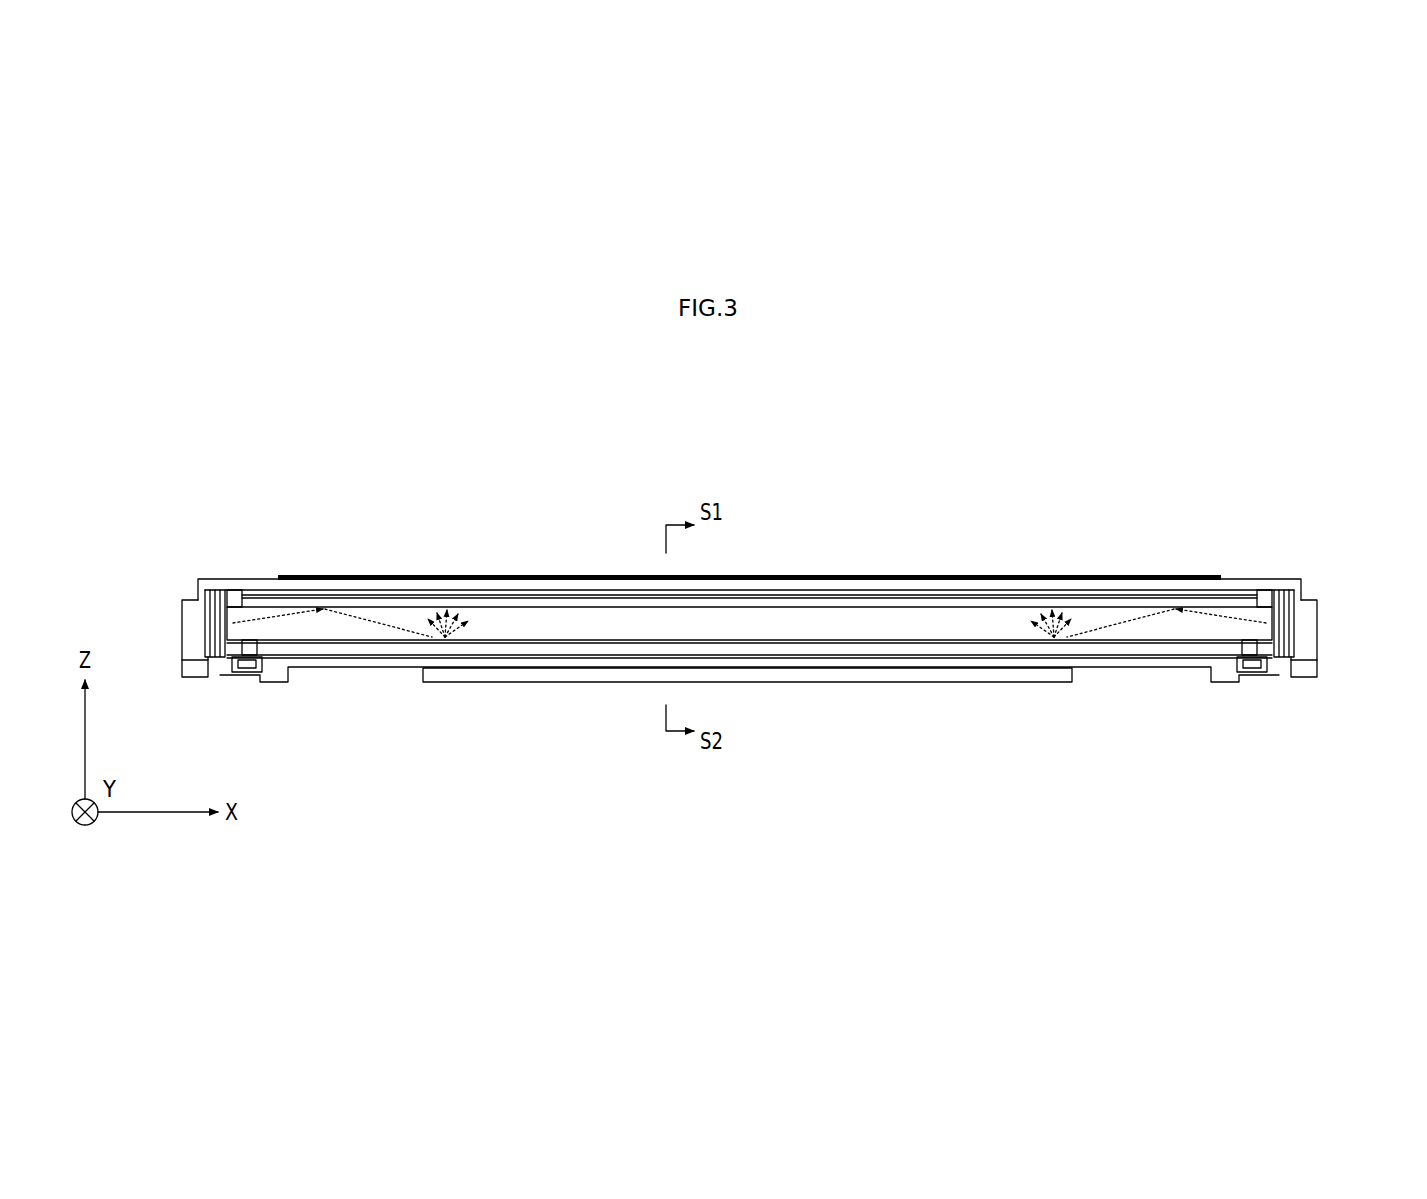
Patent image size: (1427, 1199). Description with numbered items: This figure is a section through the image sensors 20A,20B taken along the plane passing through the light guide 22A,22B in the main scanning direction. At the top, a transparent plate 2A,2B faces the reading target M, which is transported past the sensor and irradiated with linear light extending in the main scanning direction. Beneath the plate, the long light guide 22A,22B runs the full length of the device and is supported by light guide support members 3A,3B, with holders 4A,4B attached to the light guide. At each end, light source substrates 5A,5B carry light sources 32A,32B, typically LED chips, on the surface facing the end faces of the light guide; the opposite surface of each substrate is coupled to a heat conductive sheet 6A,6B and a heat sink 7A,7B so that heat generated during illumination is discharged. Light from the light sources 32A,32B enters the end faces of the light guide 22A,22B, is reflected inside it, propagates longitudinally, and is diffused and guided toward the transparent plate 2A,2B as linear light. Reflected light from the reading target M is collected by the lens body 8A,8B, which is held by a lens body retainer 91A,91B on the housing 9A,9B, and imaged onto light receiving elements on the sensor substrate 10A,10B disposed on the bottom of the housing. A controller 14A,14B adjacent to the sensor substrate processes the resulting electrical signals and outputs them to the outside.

The image sensor 20A,20B is at (749, 537).
The transparent plate 2A,2B is at (749, 546).
The reading target M is at (1115, 575).
The light guide support member 3A,3B is at (749, 682).
The holder 4A,4B is at (749, 568).
The light source substrate 5A,5B is at (748, 695).
The heat conductive sheet 6A,6B is at (750, 683).
The heat sink 7A,7B is at (750, 623).
The lens body 8A,8B is at (749, 566).
The housing 9A,9B is at (709, 633).
The sensor substrate 10A,10B is at (749, 699).
The controller 14A,14B is at (747, 717).
The light guide 22A,22B is at (749, 677).
The light source 32A,32B is at (749, 723).
The lens body retainer 91A,91B is at (749, 727).